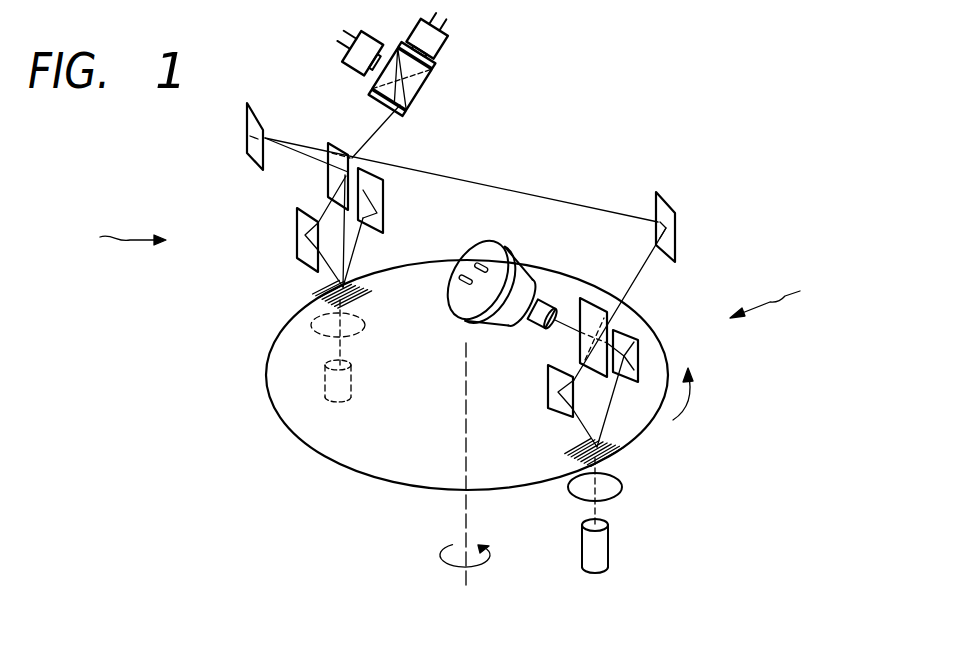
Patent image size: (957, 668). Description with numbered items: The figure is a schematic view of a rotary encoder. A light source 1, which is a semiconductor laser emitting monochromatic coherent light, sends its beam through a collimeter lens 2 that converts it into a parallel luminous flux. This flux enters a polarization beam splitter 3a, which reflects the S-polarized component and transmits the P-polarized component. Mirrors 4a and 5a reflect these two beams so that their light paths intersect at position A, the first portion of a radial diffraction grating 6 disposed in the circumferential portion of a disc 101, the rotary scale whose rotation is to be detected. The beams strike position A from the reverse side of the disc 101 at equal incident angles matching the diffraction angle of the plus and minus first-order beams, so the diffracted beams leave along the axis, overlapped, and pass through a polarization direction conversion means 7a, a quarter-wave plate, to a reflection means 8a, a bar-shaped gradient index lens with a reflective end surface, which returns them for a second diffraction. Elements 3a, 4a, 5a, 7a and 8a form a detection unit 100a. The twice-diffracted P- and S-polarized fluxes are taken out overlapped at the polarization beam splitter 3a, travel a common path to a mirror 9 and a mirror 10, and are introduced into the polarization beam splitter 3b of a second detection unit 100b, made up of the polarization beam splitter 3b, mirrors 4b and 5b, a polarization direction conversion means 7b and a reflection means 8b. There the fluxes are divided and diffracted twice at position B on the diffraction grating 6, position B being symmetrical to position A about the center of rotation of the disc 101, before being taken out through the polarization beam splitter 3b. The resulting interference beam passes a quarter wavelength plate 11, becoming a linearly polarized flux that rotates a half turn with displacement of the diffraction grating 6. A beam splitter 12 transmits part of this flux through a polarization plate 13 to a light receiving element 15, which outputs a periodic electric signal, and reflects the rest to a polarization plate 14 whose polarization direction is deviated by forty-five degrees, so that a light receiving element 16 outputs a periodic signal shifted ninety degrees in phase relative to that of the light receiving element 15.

The light source 1 is at (515, 248).
The collimeter lens 2 is at (548, 302).
The polarization beam splitter 3a is at (578, 341).
The polarization beam splitter 3b is at (327, 183).
The mirror 4a is at (550, 386).
The mirror 4b is at (384, 212).
The mirror 5a is at (641, 353).
The mirror 5b is at (296, 246).
The radial diffraction grating 6 is at (643, 428).
The polarization direction conversion means 7a is at (614, 490).
The polarization direction conversion means 7b is at (314, 336).
The reflection means 8a is at (602, 553).
The reflection means 8b is at (324, 389).
The mirror 9 is at (676, 233).
The mirror 10 is at (246, 137).
The quarter wavelength plate 11 is at (407, 120).
The beam splitter 12 is at (424, 98).
The polarization plate 13 is at (438, 66).
The polarization plate 14 is at (372, 85).
The light receiving element 15 is at (446, 42).
The light receiving element 16 is at (350, 54).
The detection unit 100a is at (791, 294).
The detection unit 100b is at (106, 237).
The disc 101 is at (368, 461).
The position A is at (618, 447).
The position B is at (318, 300).